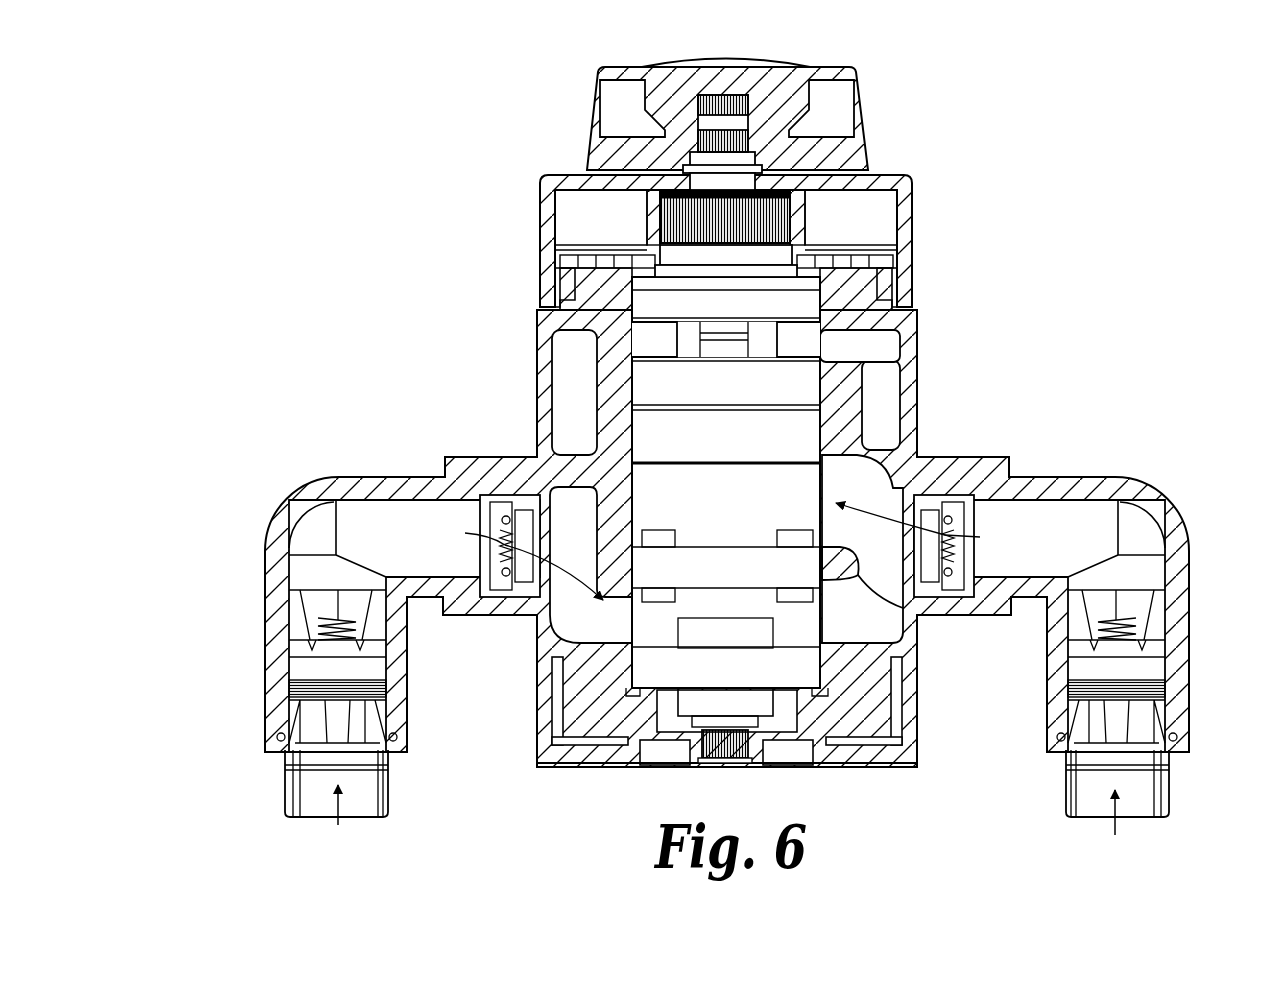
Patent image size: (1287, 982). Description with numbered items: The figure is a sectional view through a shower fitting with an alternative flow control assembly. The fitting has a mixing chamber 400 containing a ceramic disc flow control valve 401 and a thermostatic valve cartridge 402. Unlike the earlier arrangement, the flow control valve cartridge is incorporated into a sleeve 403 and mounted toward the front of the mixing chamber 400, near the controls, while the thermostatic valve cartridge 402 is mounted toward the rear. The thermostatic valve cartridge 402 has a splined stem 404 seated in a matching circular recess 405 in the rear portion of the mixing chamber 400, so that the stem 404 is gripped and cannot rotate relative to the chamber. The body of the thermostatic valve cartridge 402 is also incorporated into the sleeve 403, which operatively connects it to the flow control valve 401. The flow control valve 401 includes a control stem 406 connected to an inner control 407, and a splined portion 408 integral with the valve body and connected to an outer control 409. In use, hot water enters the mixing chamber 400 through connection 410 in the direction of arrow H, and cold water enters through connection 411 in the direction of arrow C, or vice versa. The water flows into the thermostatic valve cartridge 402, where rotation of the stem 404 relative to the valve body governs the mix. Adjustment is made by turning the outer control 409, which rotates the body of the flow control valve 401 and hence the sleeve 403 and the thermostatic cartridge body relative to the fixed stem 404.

The mixing chamber 400 is at (548, 320).
The ceramic disc flow control valve 401 is at (785, 345).
The thermostatic valve cartridge 402 is at (668, 722).
The sleeve 403 is at (635, 425).
The splined stem 404 is at (722, 762).
The circular recess 405 is at (755, 762).
The control stem 406 is at (712, 108).
The inner control 407 is at (595, 120).
The splined portion 408 is at (783, 218).
The outer control 409 is at (545, 213).
The connection 410 is at (287, 795).
The connection 411 is at (1168, 790).